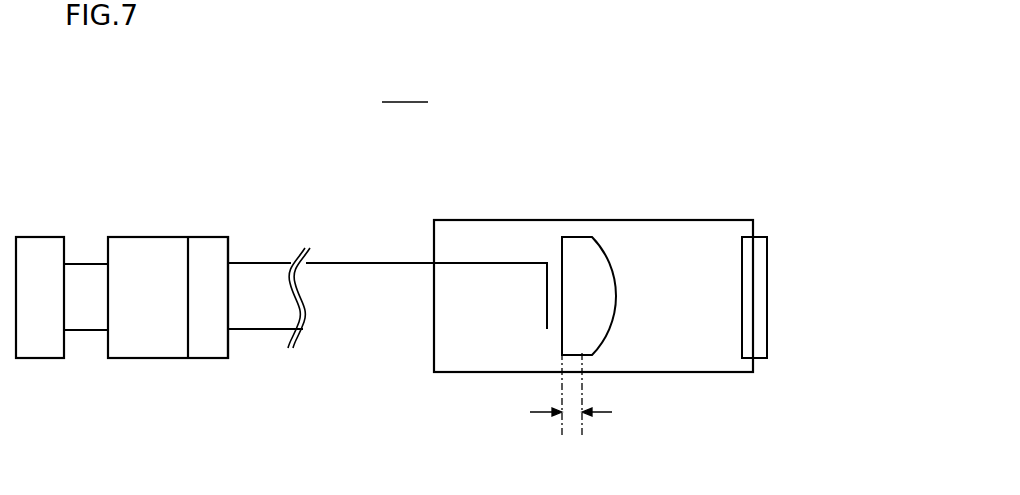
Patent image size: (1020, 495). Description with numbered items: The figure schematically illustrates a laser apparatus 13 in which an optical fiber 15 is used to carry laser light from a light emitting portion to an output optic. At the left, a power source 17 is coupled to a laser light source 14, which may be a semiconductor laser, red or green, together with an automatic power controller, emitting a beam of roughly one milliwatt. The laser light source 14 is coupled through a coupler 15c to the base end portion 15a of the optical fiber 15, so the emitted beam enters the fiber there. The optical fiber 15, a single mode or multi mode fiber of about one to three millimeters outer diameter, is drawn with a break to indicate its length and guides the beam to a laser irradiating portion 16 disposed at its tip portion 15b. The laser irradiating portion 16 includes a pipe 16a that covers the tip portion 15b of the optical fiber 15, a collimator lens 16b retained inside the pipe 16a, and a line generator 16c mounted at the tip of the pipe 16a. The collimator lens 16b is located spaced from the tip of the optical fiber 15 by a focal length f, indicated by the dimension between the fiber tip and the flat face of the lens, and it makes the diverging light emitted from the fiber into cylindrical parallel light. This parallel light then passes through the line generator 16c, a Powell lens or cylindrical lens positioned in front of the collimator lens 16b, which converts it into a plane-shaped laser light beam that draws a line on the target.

The laser apparatus 13 is at (387, 160).
The laser light source 14 is at (157, 237).
The optical fiber 15 is at (327, 263).
The base end portion 15a is at (258, 263).
The tip portion 15b is at (407, 263).
The coupler 15c is at (212, 237).
The laser irradiating portion 16 is at (627, 220).
The pipe 16a is at (532, 220).
The collimator lens 16b is at (612, 323).
The line generator 16c is at (768, 295).
The power source 17 is at (40, 237).
The focal length f is at (584, 395).